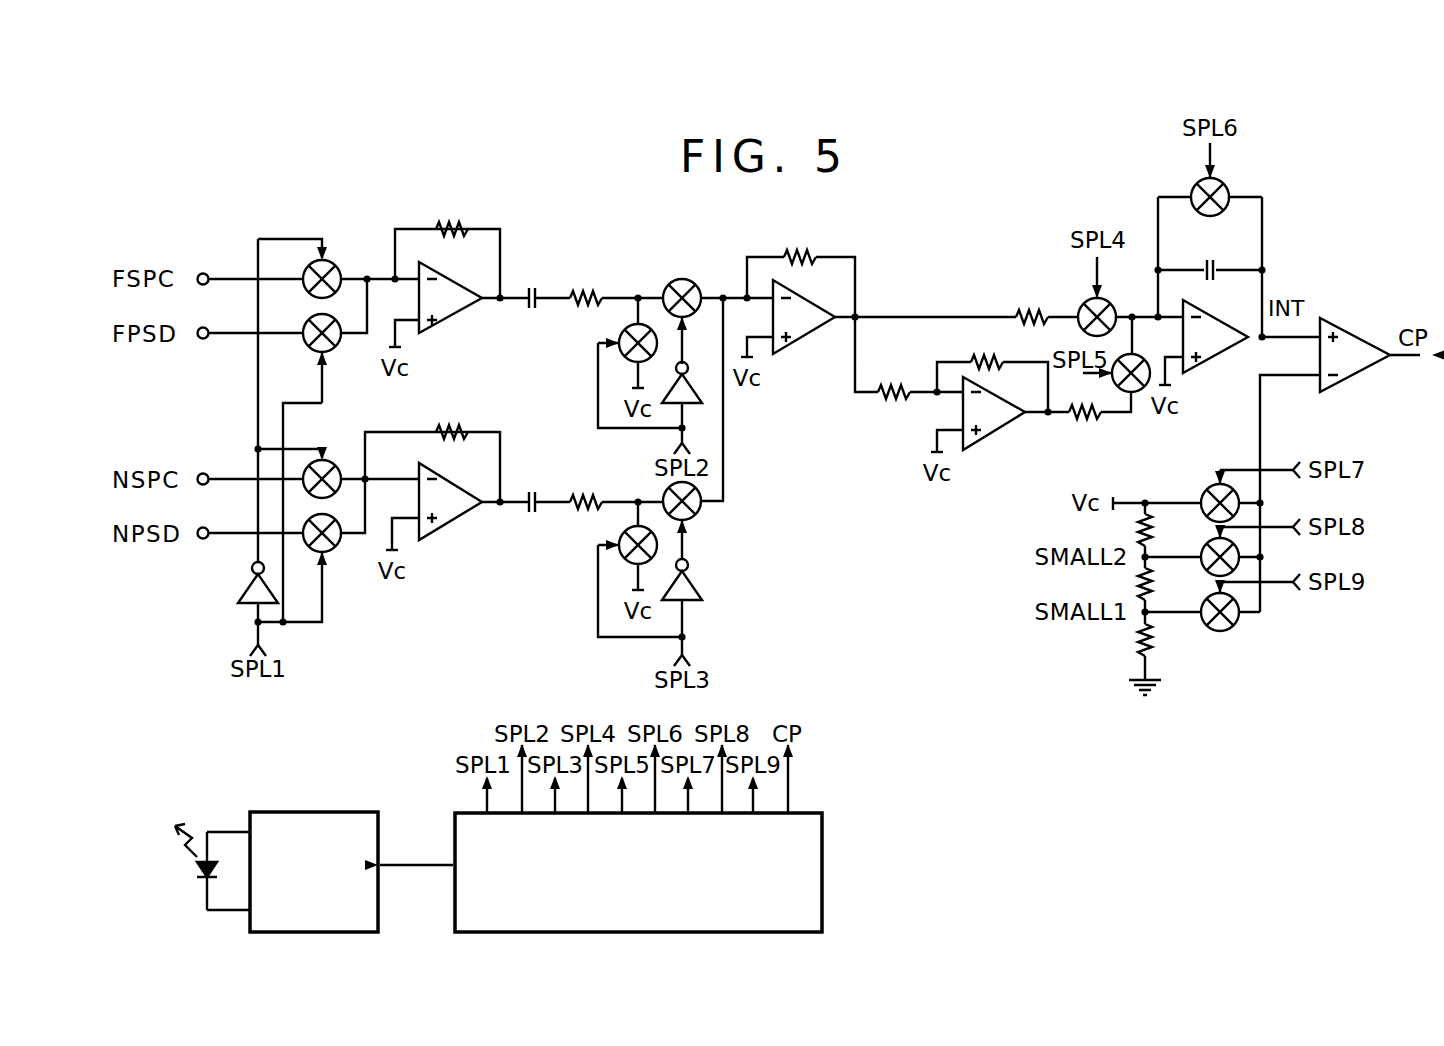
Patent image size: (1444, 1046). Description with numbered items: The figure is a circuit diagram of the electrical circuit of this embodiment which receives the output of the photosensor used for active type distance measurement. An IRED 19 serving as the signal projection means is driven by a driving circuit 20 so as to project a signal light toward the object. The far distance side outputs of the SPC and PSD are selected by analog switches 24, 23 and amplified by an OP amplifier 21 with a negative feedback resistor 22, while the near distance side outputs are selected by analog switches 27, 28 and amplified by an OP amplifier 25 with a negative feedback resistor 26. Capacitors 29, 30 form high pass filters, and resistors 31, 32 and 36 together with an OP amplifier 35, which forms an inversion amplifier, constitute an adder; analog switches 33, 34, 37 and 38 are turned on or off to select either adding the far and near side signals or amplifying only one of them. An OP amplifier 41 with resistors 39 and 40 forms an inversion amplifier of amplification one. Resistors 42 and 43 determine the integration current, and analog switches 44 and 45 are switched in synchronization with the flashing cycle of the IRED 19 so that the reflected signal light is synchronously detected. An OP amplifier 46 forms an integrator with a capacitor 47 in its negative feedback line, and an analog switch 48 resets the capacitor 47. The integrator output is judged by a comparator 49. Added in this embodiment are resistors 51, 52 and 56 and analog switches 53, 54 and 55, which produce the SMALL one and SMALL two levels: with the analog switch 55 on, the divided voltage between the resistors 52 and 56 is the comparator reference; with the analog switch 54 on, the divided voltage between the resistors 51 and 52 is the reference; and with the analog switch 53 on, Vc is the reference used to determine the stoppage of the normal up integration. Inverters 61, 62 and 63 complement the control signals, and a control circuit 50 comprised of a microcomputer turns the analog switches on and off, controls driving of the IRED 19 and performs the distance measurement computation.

The IRED 19 is at (205, 860).
The driving circuit 20 is at (322, 810).
The OP amplifier 21 is at (460, 312).
The negative feedback resistor 22 is at (455, 226).
The analog switch 23 is at (333, 351).
The analog switch 24 is at (333, 262).
The OP amplifier 25 is at (453, 523).
The negative feedback resistor 26 is at (453, 427).
The analog switch 27 is at (330, 458).
The analog switch 28 is at (337, 558).
The capacitor 29 is at (535, 284).
The capacitor 30 is at (530, 515).
The resistor 31 is at (600, 291).
The resistor 32 is at (582, 517).
The analog switch 33 is at (686, 278).
The analog switch 34 is at (628, 358).
The OP amplifier 35 is at (810, 332).
The resistor 36 is at (810, 250).
The analog switch 37 is at (698, 518).
The analog switch 38 is at (628, 562).
The resistor 39 is at (890, 400).
The resistor 40 is at (987, 352).
The OP amplifier 41 is at (1000, 430).
The resistor 42 is at (1043, 310).
The resistor 43 is at (1087, 420).
The analog switch 44 is at (1117, 308).
The analog switch 45 is at (1130, 395).
The OP amplifier 46 is at (1217, 363).
The capacitor 47 is at (1213, 263).
The analog switch 48 is at (1227, 182).
The comparator 49 is at (1343, 383).
The control circuit 50 is at (822, 860).
The resistor 51 is at (1151, 531).
The resistor 52 is at (1151, 584).
The analog switch 53 is at (1233, 492).
The analog switch 54 is at (1233, 548).
The analog switch 55 is at (1235, 627).
The resistor 56 is at (1151, 641).
The inverter 61 is at (242, 586).
The inverter 62 is at (693, 390).
The inverter 63 is at (692, 583).